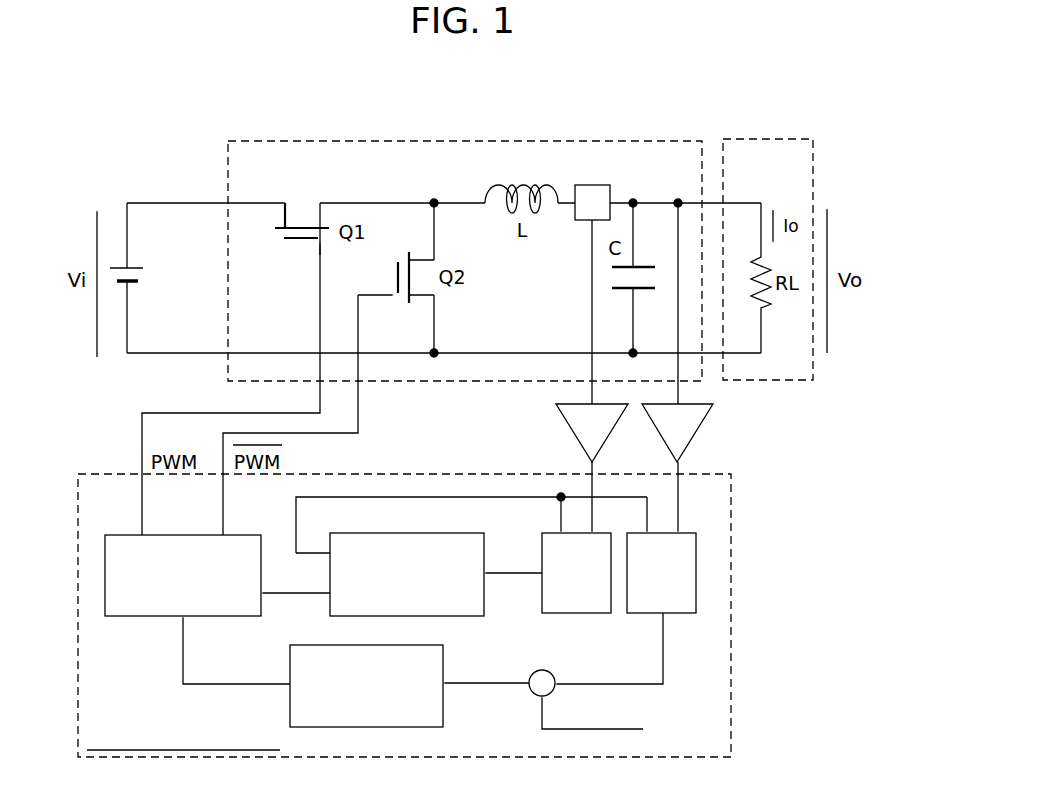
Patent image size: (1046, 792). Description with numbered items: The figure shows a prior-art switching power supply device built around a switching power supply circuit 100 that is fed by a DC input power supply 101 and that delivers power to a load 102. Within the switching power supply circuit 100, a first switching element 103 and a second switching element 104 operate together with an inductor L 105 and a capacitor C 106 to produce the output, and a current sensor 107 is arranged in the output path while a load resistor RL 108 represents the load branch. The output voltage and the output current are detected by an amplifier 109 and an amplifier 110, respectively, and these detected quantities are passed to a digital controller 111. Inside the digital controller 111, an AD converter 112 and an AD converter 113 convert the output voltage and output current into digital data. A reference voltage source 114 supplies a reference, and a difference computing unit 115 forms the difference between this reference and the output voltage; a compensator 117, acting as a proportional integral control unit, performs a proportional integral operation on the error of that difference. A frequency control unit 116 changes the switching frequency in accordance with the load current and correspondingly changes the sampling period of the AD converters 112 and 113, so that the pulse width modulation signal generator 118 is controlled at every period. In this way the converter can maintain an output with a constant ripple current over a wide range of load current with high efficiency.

The switching power supply circuit 100 is at (347, 141).
The DC input power supply 101 is at (145, 280).
The load 102 is at (747, 139).
The switching element Q1 103 is at (282, 248).
The switching element Q2 104 is at (443, 298).
The inductor L 105 is at (508, 183).
The capacitor C 106 is at (648, 260).
The current sensor 107 is at (600, 187).
The load resistor RL 108 is at (772, 307).
The amplifier 109 is at (700, 437).
The amplifier 110 is at (573, 437).
The digital controller 111 is at (422, 474).
The AD converter 112 is at (638, 613).
The AD converter 113 is at (570, 613).
The reference voltage source 114 is at (687, 715).
The difference computing unit 115 is at (525, 697).
The frequency control unit 116 is at (457, 533).
The compensator 117 is at (443, 653).
The PWM signal generator 118 is at (120, 616).